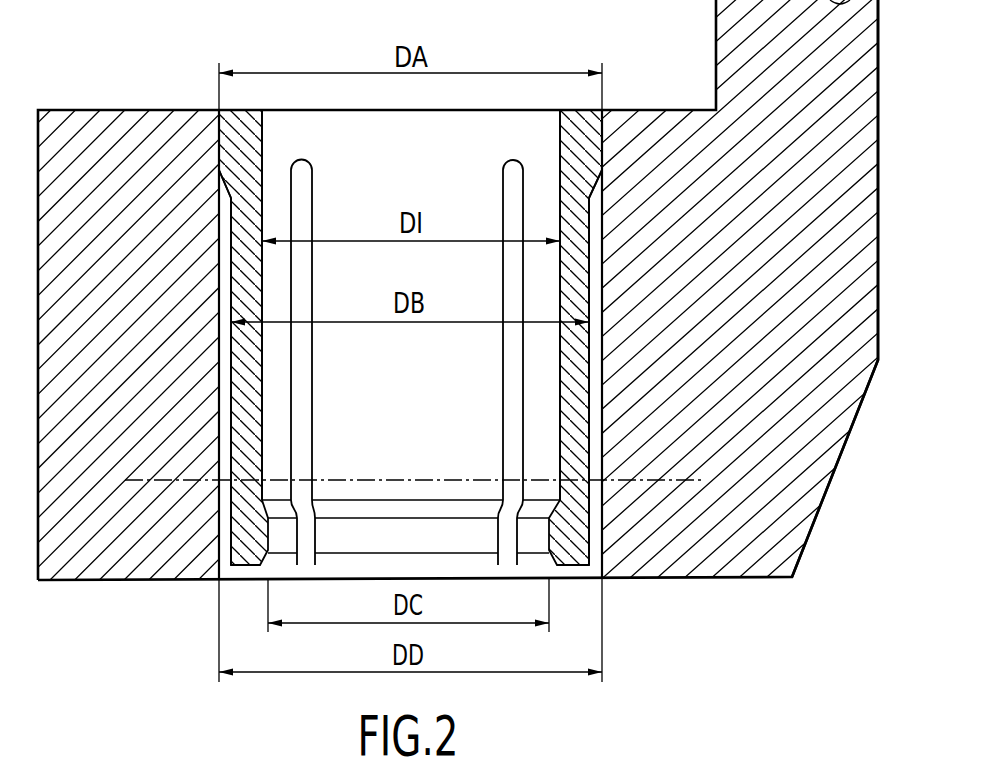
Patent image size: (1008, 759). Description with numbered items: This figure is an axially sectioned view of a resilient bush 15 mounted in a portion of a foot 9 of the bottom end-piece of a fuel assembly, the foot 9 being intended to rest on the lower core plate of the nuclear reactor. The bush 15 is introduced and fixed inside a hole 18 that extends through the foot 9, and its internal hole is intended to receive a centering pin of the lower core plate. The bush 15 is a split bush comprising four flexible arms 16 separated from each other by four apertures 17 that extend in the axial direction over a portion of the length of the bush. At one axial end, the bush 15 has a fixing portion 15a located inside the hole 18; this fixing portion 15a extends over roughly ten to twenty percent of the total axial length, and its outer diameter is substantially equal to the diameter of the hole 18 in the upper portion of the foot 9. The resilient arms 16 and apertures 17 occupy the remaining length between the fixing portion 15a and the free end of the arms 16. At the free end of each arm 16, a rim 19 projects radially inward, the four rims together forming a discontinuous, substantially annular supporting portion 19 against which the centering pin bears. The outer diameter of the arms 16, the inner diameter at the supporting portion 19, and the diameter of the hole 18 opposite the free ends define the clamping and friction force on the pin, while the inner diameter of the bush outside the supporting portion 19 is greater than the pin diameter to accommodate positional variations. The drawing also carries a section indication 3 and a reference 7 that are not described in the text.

The section line III-III 3 is at (128, 480).
The nozzle body 7 is at (856, 478).
The foot 9 is at (684, 110).
The resilient bush 15 is at (617, 152).
The fixing portion 15a is at (228, 152).
The flexible arms 16 is at (245, 294).
The apertures 17 is at (305, 197).
The hole 18 is at (240, 226).
The rim 19 is at (433, 530).